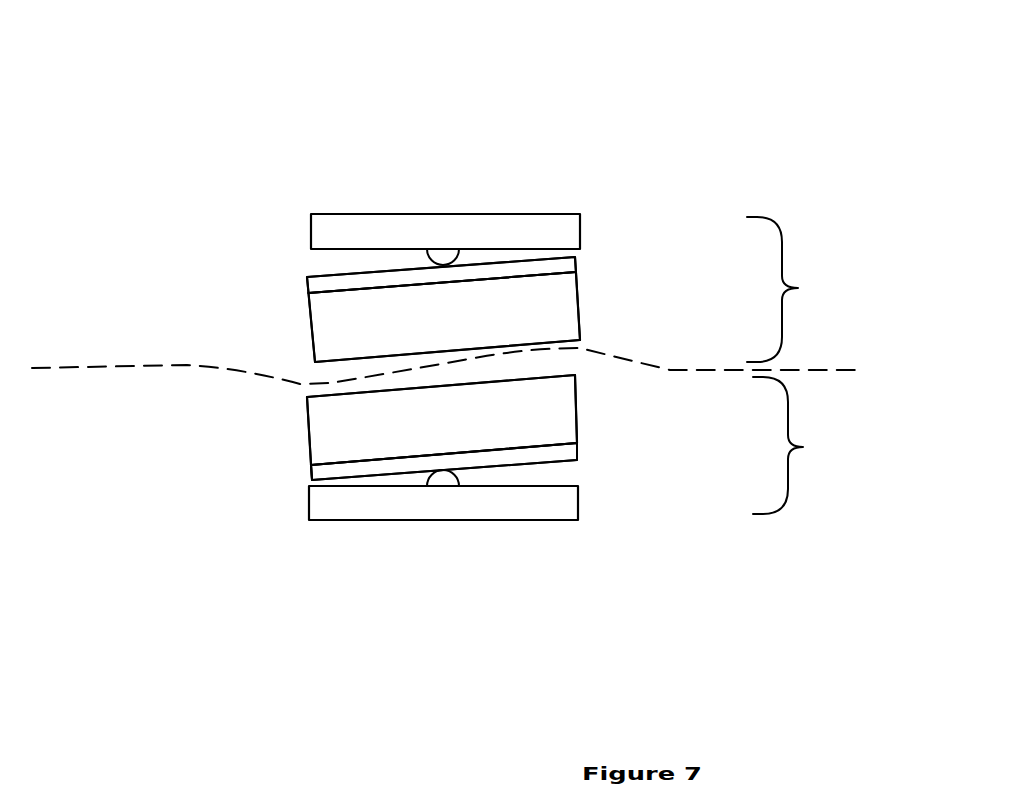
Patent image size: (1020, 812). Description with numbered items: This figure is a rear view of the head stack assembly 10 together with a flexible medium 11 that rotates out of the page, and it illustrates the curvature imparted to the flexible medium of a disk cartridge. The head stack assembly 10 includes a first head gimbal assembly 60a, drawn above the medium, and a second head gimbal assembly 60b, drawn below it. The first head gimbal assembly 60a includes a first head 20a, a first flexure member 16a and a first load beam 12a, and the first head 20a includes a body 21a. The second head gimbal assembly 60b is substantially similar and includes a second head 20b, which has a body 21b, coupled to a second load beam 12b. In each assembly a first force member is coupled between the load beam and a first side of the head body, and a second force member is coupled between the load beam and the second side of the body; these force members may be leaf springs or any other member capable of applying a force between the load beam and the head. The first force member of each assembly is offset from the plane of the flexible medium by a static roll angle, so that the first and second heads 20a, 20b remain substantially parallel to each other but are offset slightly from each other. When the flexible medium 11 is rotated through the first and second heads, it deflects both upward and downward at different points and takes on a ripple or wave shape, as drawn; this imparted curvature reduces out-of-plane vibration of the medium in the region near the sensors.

The head stack assembly 10 is at (462, 25).
The skin / tissue interface line 11 is at (48, 365).
The first load beam 12a is at (443, 214).
The second load beam 12b is at (442, 520).
The first flexure member 16a is at (323, 288).
The first head 20a is at (487, 300).
The second head 20b is at (577, 445).
The body 21a is at (327, 315).
The body 21b is at (312, 462).
The first head gimbal assembly 60a is at (809, 289).
The second head gimbal assembly 60b is at (816, 445).